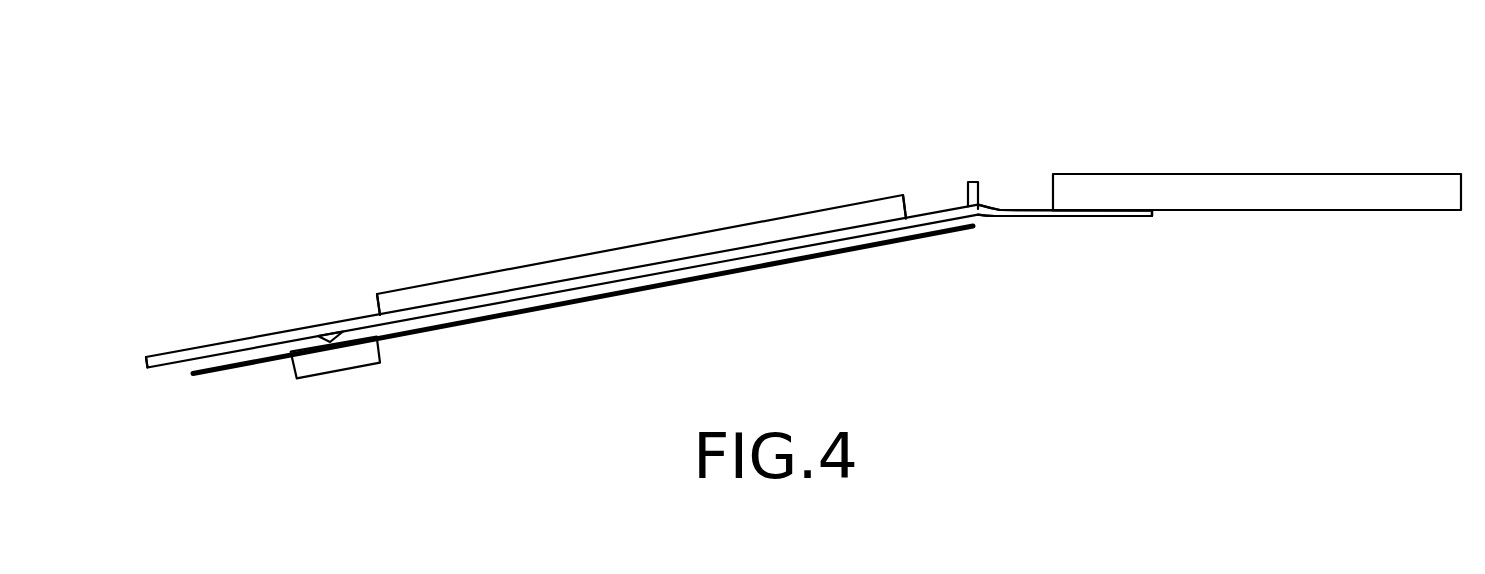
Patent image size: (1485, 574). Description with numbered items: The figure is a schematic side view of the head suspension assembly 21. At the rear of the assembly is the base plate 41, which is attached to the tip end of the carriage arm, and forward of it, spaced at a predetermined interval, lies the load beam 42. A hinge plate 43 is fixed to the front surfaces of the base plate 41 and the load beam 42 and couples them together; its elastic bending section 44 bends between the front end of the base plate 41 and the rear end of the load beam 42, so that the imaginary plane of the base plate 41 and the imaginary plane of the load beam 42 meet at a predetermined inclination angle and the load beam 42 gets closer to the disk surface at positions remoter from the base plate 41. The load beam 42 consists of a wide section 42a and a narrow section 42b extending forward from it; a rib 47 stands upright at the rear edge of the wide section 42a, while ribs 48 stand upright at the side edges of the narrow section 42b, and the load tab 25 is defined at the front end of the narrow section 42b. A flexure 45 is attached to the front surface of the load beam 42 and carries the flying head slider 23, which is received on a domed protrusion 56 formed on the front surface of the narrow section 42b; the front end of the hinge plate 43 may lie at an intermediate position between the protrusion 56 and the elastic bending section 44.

The head suspension assembly 21 is at (598, 148).
The flying head slider 23 is at (322, 373).
The load tab 25 is at (158, 370).
The base plate 41 is at (1413, 175).
The load beam 42 is at (523, 288).
The wide section 42a is at (935, 210).
The narrow section 42b is at (449, 306).
The hinge plate 43 is at (1090, 218).
The elastic bending section 44 is at (1012, 220).
The flexure 45 is at (237, 370).
The rib 47 is at (973, 182).
The rib 48 is at (742, 226).
The domed protrusion 56 is at (319, 338).